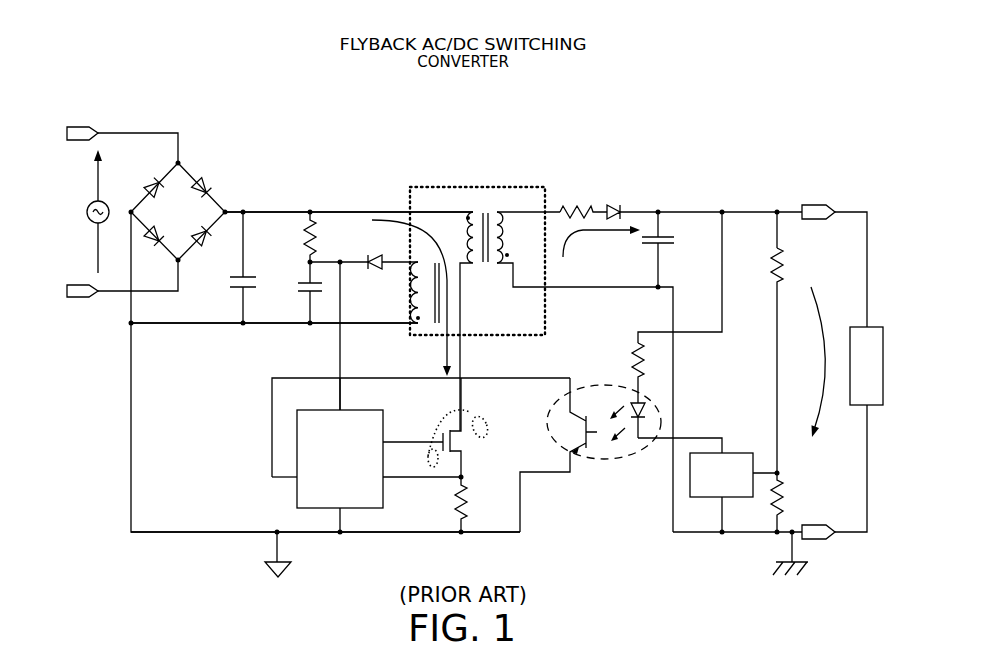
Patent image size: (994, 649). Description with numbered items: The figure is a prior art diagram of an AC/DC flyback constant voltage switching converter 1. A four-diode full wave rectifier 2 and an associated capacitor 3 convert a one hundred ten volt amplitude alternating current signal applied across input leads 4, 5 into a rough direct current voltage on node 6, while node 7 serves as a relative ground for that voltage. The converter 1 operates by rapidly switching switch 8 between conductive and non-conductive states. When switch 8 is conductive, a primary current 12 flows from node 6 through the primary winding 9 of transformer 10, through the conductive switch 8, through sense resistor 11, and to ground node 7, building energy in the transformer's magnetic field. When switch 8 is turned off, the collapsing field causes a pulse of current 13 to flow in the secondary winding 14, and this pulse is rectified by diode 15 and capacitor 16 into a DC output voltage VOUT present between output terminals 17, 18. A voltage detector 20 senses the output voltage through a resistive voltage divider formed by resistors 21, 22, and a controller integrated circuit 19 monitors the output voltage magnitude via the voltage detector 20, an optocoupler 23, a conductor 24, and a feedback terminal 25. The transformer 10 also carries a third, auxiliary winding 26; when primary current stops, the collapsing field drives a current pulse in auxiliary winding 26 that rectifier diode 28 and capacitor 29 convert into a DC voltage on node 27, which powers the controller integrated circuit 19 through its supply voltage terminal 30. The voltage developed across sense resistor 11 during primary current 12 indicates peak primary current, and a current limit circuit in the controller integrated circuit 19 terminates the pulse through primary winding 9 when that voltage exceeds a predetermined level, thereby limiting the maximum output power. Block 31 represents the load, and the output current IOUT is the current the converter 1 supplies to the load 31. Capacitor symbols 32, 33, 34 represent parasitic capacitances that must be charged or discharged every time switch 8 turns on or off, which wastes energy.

The flyback constant voltage switching converter 1 is at (489, 114).
The four-diode full wave rectifier 2 is at (203, 160).
The capacitor 3 is at (256, 278).
The input lead 4 is at (82, 127).
The input lead 5 is at (82, 284).
The node 6 is at (339, 211).
The node 7 is at (226, 323).
The switch 8 is at (469, 446).
The primary winding 9 is at (468, 236).
The transformer 10 is at (424, 186).
The sense resistor 11 is at (468, 500).
The primary current 12 is at (444, 356).
The pulse of current 13 is at (602, 233).
The secondary winding 14 is at (510, 236).
The diode 15 is at (612, 204).
The capacitor 16 is at (678, 240).
The output terminal 17 is at (813, 204).
The output terminal 18 is at (818, 540).
The controller integrated circuit 19 is at (330, 467).
The voltage detector 20 is at (740, 452).
The resistor 21 is at (783, 268).
The resistor 22 is at (785, 482).
The optocoupler 23 is at (591, 385).
The conductor 24 is at (305, 377).
The feedback terminal 25 is at (291, 480).
The auxiliary winding 26 is at (412, 302).
The node 27 is at (344, 261).
The rectifier diode 28 is at (378, 254).
The capacitor 29 is at (296, 290).
The supply voltage terminal 30 is at (343, 402).
The load 31 is at (875, 327).
The capacitor symbol 32 is at (486, 416).
The capacitor symbol 33 is at (440, 413).
The capacitor symbol 34 is at (424, 456).